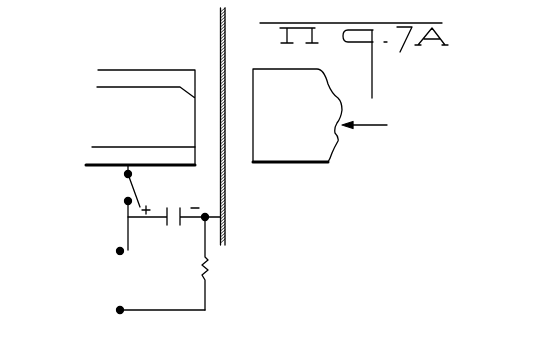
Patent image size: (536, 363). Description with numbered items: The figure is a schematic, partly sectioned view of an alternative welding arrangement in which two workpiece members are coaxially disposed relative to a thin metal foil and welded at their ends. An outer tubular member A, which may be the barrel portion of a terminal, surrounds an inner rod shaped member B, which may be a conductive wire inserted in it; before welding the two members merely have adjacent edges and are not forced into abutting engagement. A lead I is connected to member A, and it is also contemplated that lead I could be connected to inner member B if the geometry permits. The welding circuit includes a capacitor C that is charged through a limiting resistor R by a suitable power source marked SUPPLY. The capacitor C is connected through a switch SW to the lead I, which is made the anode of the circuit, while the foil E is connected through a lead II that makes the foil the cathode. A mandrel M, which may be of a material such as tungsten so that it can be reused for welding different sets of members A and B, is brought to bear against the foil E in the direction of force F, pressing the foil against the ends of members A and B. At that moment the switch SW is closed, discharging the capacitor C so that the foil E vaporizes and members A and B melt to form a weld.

The tubular member A is at (162, 78).
The rod shaped member B is at (113, 95).
The lead I is at (124, 174).
The foil E is at (226, 57).
The mandrel M is at (302, 150).
The force F is at (375, 124).
The switch SW is at (128, 176).
The capacitor C is at (166, 206).
The lead II is at (214, 214).
The limiting resistor R is at (212, 271).
The supply SUPPLY is at (140, 281).